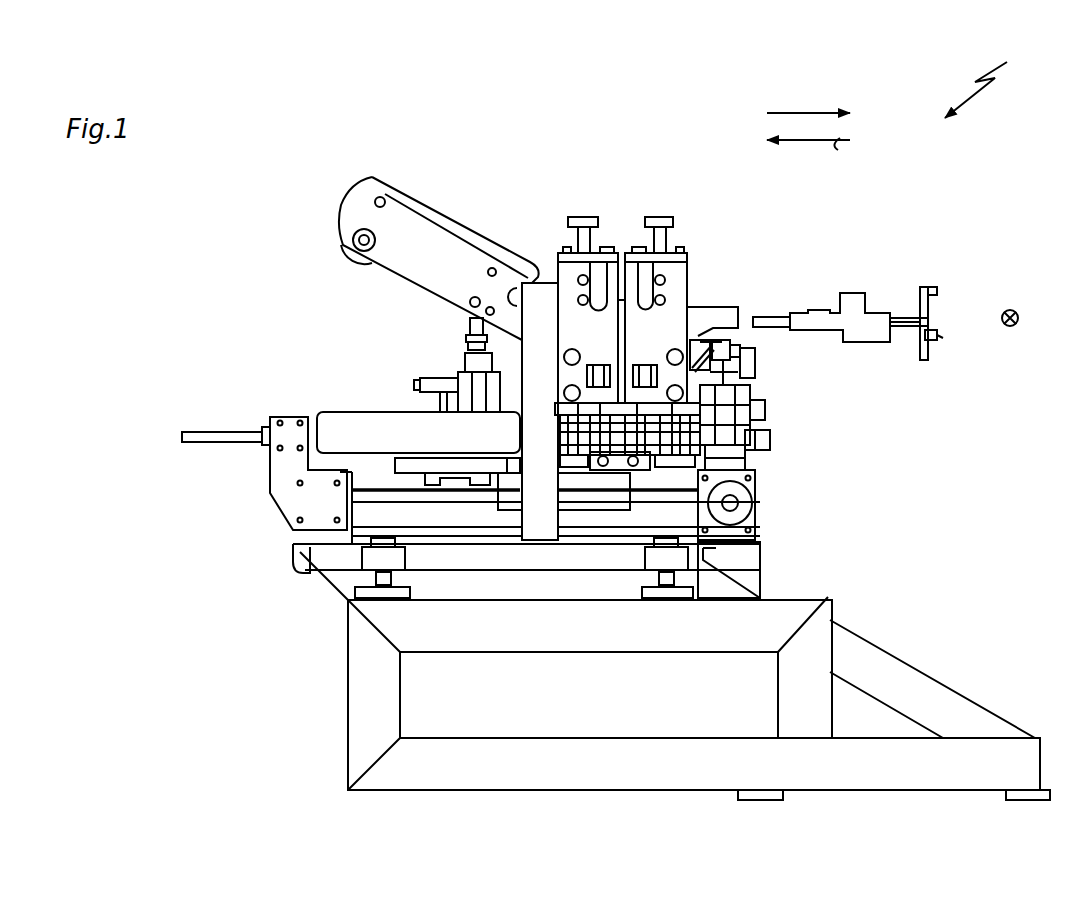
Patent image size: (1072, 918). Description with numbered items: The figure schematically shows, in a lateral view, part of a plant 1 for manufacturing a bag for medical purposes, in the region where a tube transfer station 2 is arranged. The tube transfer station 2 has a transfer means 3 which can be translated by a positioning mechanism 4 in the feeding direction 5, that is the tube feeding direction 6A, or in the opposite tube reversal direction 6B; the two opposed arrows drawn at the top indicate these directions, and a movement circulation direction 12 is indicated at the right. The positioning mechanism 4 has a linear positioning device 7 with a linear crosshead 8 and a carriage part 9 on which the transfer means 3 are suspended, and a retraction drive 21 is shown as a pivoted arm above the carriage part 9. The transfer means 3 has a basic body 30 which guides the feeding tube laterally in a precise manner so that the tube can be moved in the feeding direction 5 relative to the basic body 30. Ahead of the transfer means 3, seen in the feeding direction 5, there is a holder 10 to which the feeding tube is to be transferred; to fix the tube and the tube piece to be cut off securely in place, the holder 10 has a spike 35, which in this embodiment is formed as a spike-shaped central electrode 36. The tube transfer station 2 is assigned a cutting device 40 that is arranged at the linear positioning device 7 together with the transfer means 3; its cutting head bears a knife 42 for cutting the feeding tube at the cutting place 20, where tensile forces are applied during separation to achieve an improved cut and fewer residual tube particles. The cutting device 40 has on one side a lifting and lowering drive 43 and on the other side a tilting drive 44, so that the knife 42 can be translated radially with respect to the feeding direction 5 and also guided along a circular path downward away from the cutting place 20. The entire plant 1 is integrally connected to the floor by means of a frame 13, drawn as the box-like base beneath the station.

The plant 1 is at (987, 83).
The tube transfer station 2 is at (633, 145).
The transfer means 3 is at (723, 245).
The positioning mechanism 4 is at (270, 370).
The feeding direction 5 is at (812, 108).
The tube feeding direction 6A is at (790, 105).
The tube reversal direction 6B is at (859, 156).
The linear positioning device 7 is at (243, 520).
The linear crosshead 8 is at (367, 513).
The carriage part 9 is at (545, 520).
The holder 10 is at (897, 266).
The movement circulation direction 12 is at (1035, 319).
The frame 13 is at (356, 735).
The cutting place 20 is at (758, 290).
The retraction drive 21 is at (423, 223).
The basic body 30 is at (706, 315).
The spike 35 is at (775, 318).
The spike-shaped central electrode 36 is at (782, 330).
The cutting device 40 is at (790, 408).
The knife 42 is at (745, 335).
The lifting and lowering drive 43 is at (765, 468).
The tilting drive 44 is at (750, 402).